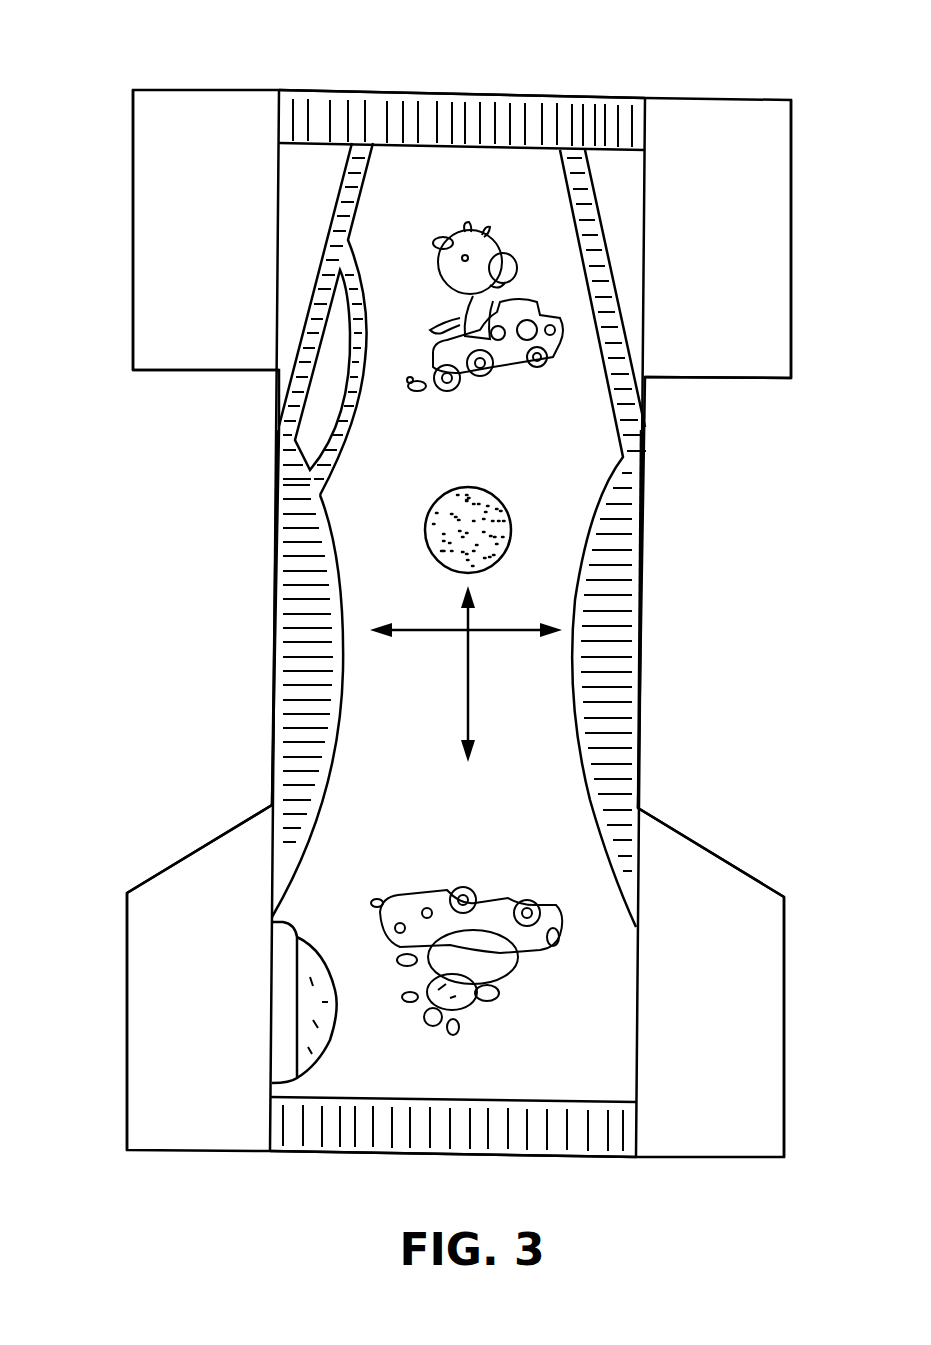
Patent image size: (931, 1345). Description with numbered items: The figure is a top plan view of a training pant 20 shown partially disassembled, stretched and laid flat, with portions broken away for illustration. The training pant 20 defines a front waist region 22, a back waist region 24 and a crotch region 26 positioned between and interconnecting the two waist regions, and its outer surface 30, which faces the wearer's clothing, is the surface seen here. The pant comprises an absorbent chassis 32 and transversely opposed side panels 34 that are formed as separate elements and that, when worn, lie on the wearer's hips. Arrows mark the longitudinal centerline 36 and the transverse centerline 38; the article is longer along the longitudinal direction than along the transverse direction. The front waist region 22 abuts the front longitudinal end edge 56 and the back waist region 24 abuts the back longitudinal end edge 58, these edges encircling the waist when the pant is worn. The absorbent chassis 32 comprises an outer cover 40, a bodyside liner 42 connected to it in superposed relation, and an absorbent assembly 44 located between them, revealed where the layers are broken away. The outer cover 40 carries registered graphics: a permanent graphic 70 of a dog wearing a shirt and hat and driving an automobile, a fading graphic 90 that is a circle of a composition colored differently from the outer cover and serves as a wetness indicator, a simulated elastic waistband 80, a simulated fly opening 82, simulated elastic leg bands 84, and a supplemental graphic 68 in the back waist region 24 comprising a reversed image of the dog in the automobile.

The training pant 20 is at (112, 182).
The front waist region 22 is at (110, 335).
The back waist region 24 is at (145, 851).
The crotch region 26 is at (690, 735).
The outer surface 30 is at (700, 351).
The absorbent chassis 32 is at (275, 597).
The side panels 34 is at (193, 331).
The longitudinal centerline 36 is at (468, 681).
The transverse centerline 38 is at (505, 635).
The outer cover 40 is at (343, 513).
The bodyside liner 42 is at (280, 1007).
The absorbent assembly 44 is at (322, 1010).
The front longitudinal end edge 56 is at (685, 98).
The back longitudinal end edge 58 is at (672, 1158).
The supplemental graphic 68 is at (545, 978).
The permanent graphic 70 is at (482, 385).
The simulated elastic waistband 80 is at (497, 135).
The simulated fly opening 82 is at (312, 298).
The simulated elastic leg bands 84 is at (622, 532).
The fading graphic 90 is at (497, 492).